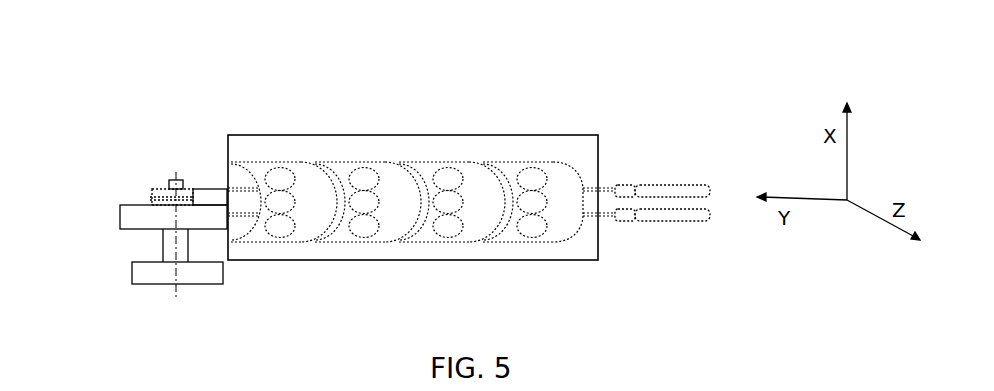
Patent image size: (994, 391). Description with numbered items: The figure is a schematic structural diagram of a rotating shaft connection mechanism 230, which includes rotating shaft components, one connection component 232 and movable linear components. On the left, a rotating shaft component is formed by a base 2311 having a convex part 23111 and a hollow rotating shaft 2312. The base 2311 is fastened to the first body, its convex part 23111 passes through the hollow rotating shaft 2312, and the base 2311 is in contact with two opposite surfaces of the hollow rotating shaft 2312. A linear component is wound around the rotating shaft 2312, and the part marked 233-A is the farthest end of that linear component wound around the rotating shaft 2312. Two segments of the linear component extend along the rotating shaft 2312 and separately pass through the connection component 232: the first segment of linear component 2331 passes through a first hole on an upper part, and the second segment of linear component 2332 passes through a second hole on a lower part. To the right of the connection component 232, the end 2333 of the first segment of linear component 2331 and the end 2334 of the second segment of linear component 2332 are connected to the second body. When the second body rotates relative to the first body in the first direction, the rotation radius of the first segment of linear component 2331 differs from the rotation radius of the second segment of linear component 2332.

The rotating shaft connection mechanism 230 is at (447, 77).
The connection component 232 is at (413, 135).
The first segment of linear component 2331 is at (603, 183).
The second segment of linear component 2332 is at (603, 218).
The end of the first segment of linear component 2333 is at (682, 183).
The end of the second segment of linear component 2334 is at (683, 218).
The base 2311 is at (153, 229).
The rotating shaft 2312 is at (160, 190).
The convex part 23111 is at (193, 170).
The farthest end of the linear component 233-A is at (152, 200).